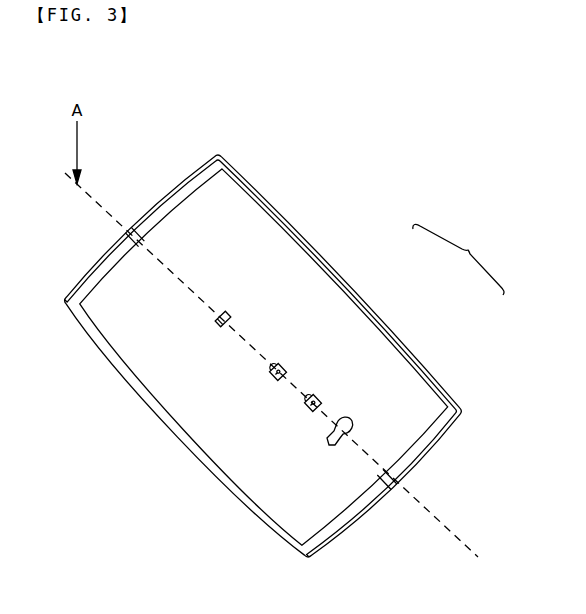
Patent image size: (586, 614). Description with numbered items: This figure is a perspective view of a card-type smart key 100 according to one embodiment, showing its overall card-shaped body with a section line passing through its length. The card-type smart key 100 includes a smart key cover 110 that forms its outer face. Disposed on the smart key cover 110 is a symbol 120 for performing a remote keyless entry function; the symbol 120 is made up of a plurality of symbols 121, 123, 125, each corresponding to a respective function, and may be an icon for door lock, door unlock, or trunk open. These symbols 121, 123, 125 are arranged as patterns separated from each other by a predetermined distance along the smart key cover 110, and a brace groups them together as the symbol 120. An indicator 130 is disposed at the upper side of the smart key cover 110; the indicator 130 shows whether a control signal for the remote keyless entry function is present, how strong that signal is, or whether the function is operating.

The card-type smart key 100 is at (205, 98).
The smart key cover 110 is at (233, 217).
The symbol 120 is at (458, 259).
The symbol 121 is at (348, 417).
The symbol 123 is at (318, 394).
The symbol 125 is at (284, 364).
The indicator 130 is at (213, 323).